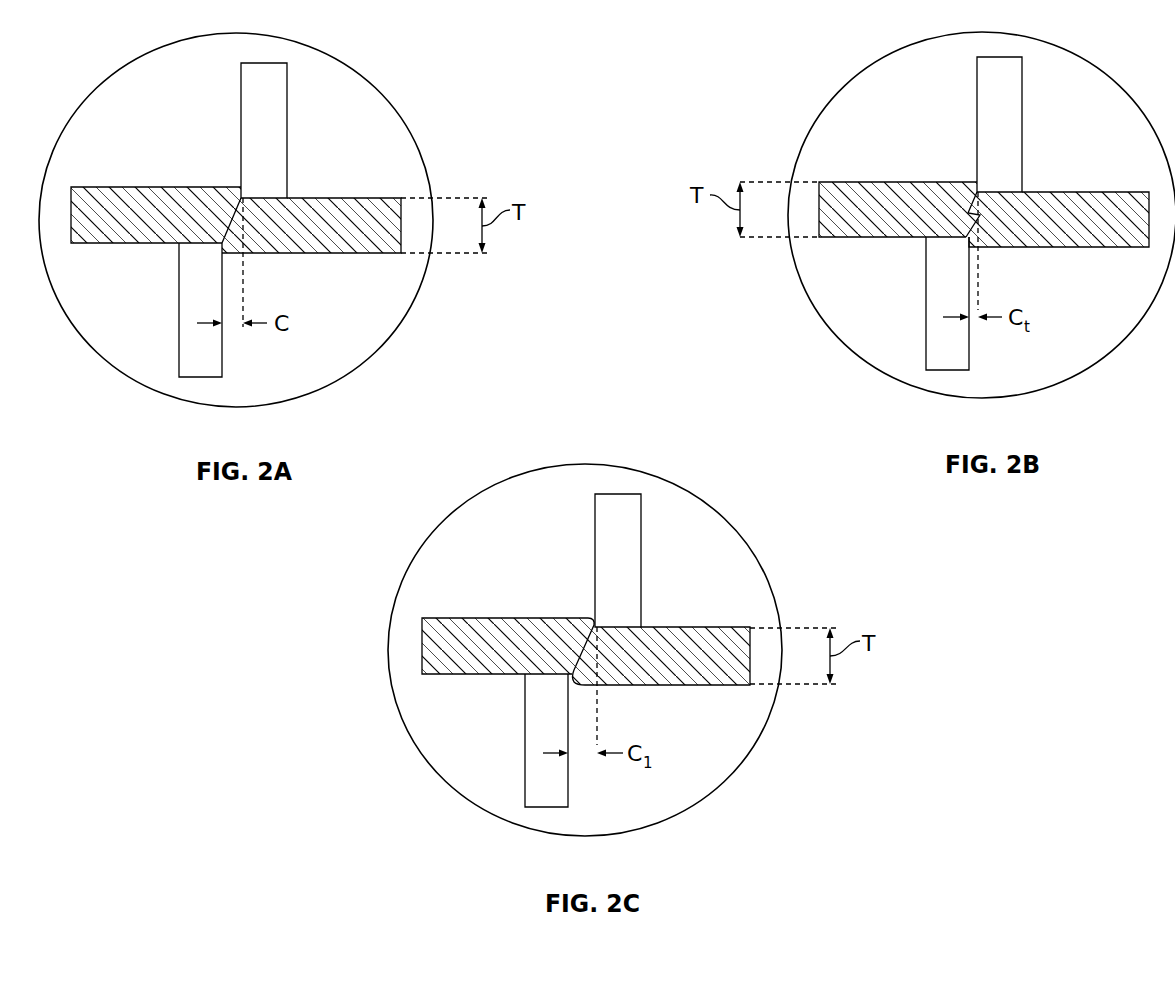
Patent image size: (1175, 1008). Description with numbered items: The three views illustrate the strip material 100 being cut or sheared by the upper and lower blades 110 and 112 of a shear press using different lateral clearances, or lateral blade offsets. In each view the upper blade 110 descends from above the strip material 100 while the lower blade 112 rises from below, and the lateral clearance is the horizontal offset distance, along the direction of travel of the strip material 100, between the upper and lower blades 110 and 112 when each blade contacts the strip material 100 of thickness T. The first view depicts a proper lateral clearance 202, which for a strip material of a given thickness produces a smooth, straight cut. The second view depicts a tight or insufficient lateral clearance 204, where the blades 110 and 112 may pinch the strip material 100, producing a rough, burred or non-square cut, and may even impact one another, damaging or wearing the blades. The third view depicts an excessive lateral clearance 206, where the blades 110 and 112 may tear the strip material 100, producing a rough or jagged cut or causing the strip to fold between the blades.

In FIG. 2A, the strip material 100 is at (338, 198).
In FIG. 2B, the strip material 100 is at (1085, 192).
In FIG. 2C, the strip material 100 is at (685, 627).
In FIG. 2A, the upper blade 110 is at (241, 100).
In FIG. 2B, the upper blade 110 is at (977, 93).
In FIG. 2C, the upper blade 110 is at (595, 538).
In FIG. 2A, the lower blade 112 is at (179, 304).
In FIG. 2B, the lower blade 112 is at (926, 296).
In FIG. 2C, the lower blade 112 is at (525, 731).
In FIG. 2A, the proper lateral clearance 202 is at (237, 334).
In FIG. 2B, the tight or insufficient lateral clearance 204 is at (979, 333).
In FIG. 2C, the excessive lateral clearance 206 is at (587, 765).